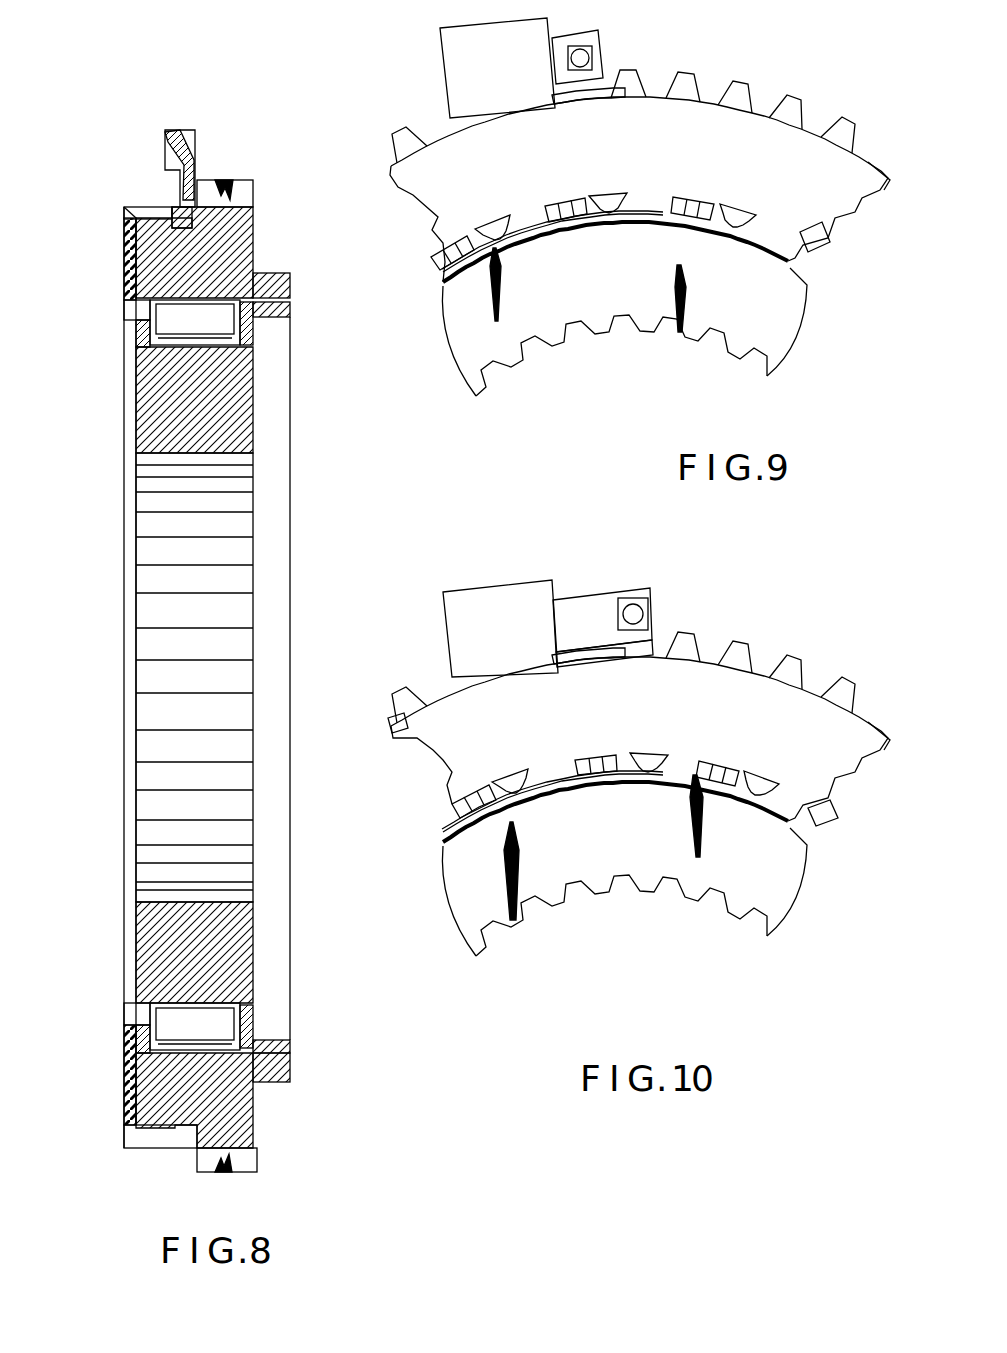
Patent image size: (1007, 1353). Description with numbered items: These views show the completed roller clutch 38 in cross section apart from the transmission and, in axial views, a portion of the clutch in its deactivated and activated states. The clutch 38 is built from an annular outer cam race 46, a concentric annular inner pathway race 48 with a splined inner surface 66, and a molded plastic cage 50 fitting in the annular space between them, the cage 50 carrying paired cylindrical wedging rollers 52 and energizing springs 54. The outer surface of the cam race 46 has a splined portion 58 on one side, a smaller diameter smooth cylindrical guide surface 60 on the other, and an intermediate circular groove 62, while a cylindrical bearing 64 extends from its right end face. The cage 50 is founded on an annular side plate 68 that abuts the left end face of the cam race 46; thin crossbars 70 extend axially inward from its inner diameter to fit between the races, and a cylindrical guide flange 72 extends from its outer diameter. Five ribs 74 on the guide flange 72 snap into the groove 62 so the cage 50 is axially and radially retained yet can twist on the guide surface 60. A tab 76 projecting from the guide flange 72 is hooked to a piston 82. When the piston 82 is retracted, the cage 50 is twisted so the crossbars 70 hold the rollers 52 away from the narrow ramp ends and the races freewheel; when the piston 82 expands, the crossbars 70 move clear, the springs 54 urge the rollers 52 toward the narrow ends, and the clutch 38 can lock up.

In FIG. 8, the roller clutch 38 is at (258, 200).
In FIG. 9, the roller clutch 38 is at (768, 106).
In FIG. 10, the roller clutch 38 is at (636, 694).
In FIG. 8, the cam race 46 is at (255, 240).
In FIG. 9, the cam race 46 is at (412, 203).
In FIG. 10, the cam race 46 is at (376, 780).
In FIG. 8, the pathway race 48 is at (136, 412).
In FIG. 9, the pathway race 48 is at (807, 308).
In FIG. 10, the pathway race 48 is at (649, 892).
In FIG. 8, the cage 50 is at (176, 132).
In FIG. 9, the cage 50 is at (826, 236).
In FIG. 10, the cage 50 is at (846, 819).
In FIG. 8, the wedging rollers 52 is at (165, 328).
In FIG. 9, the wedging rollers 52 is at (572, 225).
In FIG. 10, the wedging rollers 52 is at (595, 800).
In FIG. 9, the energizing springs 54 is at (440, 282).
In FIG. 10, the energizing springs 54 is at (595, 827).
In FIG. 8, the splined portion 58 is at (232, 185).
In FIG. 9, the splined portion 58 is at (690, 85).
In FIG. 10, the splined portion 58 is at (760, 653).
In FIG. 8, the guide surface 60 is at (128, 214).
In FIG. 9, the guide surface 60 is at (866, 172).
In FIG. 10, the guide surface 60 is at (619, 739).
In FIG. 8, the groove 62 is at (200, 205).
In FIG. 8, the bearing 64 is at (268, 280).
In FIG. 8, the splined inner surface 66 is at (215, 465).
In FIG. 9, the splined inner surface 66 is at (632, 333).
In FIG. 10, the splined inner surface 66 is at (621, 915).
In FIG. 8, the side plate 68 is at (124, 245).
In FIG. 9, the side plate 68 is at (790, 162).
In FIG. 10, the side plate 68 is at (625, 723).
In FIG. 8, the crossbars 70 is at (124, 316).
In FIG. 9, the crossbars 70 is at (648, 230).
In FIG. 10, the crossbars 70 is at (636, 836).
In FIG. 8, the guide flange 72 is at (148, 208).
In FIG. 9, the guide flange 72 is at (395, 160).
In FIG. 10, the guide flange 72 is at (416, 666).
In FIG. 8, the ribs 74 is at (180, 210).
In FIG. 9, the ribs 74 is at (615, 105).
In FIG. 10, the ribs 74 is at (592, 685).
In FIG. 8, the tab 76 is at (192, 160).
In FIG. 9, the tab 76 is at (608, 70).
In FIG. 10, the tab 76 is at (632, 627).
In FIG. 9, the piston 82 is at (470, 82).
In FIG. 10, the piston 82 is at (500, 609).